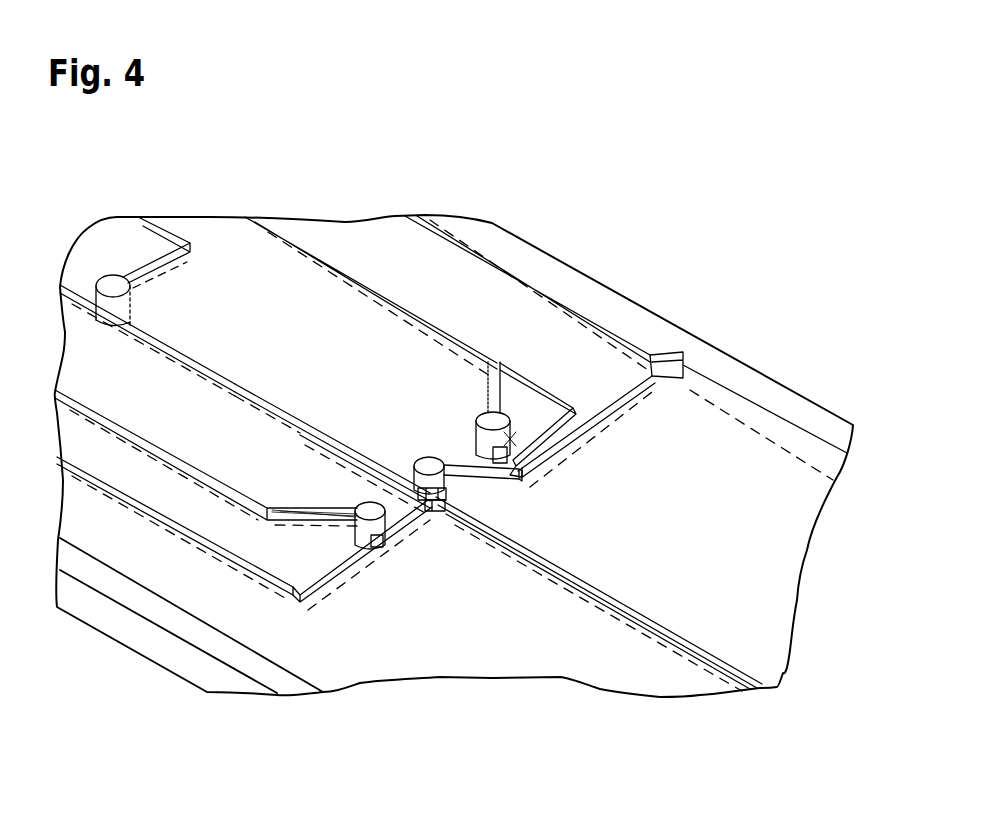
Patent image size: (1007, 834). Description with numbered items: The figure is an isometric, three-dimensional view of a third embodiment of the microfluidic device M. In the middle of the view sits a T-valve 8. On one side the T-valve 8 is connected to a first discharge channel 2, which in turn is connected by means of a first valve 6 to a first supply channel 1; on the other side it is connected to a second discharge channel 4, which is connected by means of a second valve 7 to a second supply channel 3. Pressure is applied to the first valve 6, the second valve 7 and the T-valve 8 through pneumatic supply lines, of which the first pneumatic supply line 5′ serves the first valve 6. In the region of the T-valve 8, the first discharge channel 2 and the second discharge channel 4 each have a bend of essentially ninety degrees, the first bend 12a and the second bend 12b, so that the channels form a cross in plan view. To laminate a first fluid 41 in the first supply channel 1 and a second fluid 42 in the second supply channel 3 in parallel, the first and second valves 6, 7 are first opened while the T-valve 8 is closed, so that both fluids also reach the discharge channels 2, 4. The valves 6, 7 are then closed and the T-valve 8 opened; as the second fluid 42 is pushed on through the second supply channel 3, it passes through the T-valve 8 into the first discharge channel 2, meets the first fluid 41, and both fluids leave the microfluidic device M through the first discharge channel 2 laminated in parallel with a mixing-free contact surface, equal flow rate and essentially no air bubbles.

The first supply channel 1 is at (313, 590).
The first discharge channel 2 is at (640, 620).
The second supply channel 3 is at (277, 403).
The second discharge channel 4 is at (527, 387).
The first pneumatic supply line 5′ is at (203, 477).
The first valve 6 is at (357, 500).
The second valve 7 is at (540, 440).
The T-valve 8 is at (430, 465).
The first bend 12a is at (440, 508).
The second bend 12b is at (453, 487).
The first fluid 41 is at (180, 510).
The second fluid 42 is at (197, 363).
The microfluidic device M is at (483, 654).